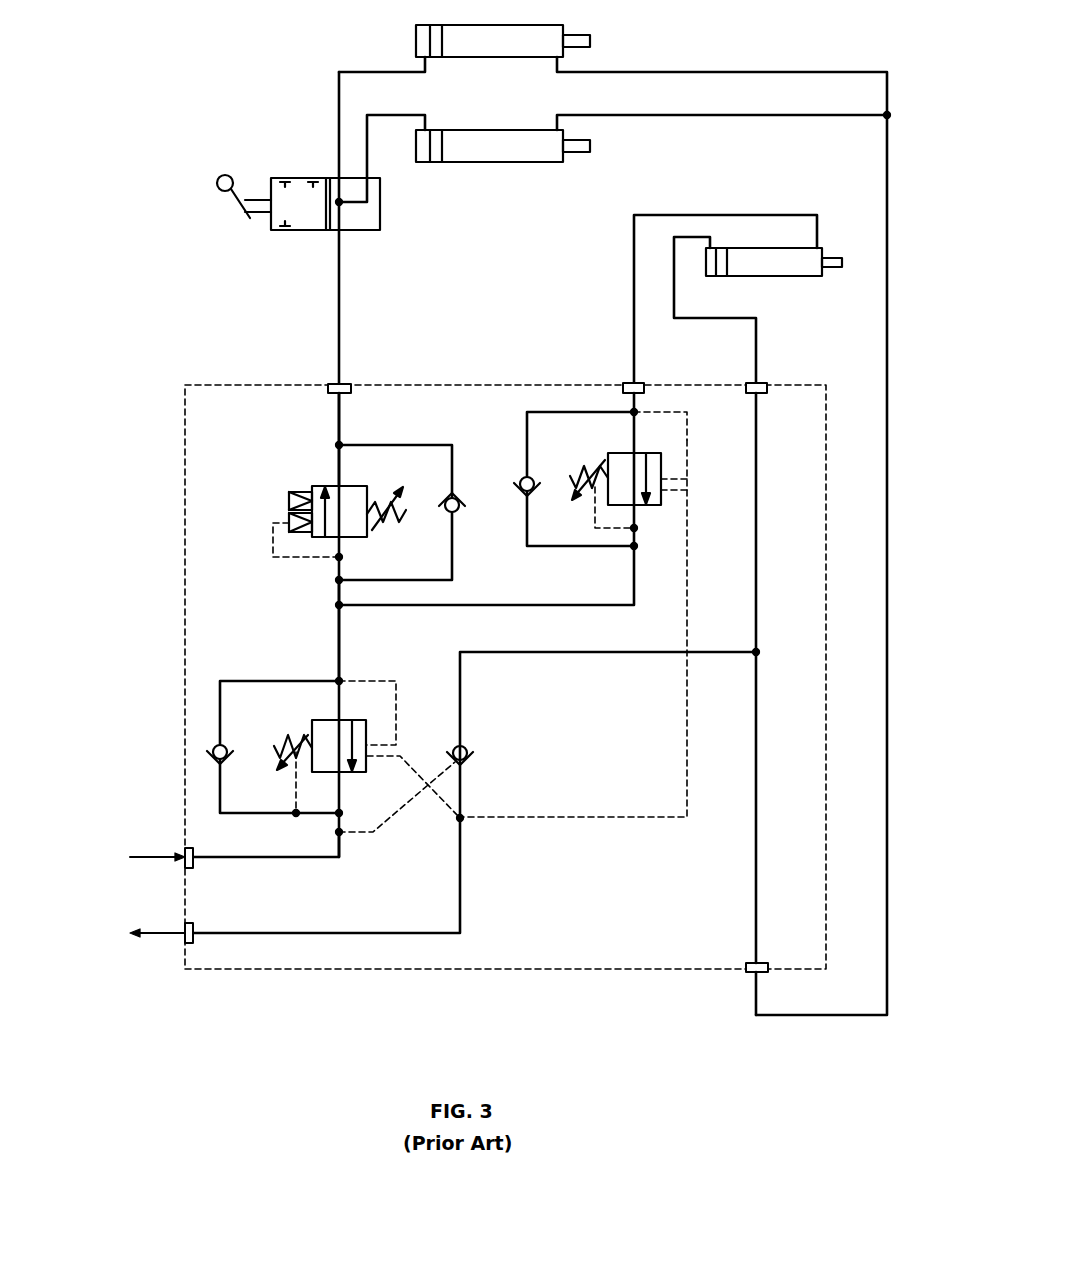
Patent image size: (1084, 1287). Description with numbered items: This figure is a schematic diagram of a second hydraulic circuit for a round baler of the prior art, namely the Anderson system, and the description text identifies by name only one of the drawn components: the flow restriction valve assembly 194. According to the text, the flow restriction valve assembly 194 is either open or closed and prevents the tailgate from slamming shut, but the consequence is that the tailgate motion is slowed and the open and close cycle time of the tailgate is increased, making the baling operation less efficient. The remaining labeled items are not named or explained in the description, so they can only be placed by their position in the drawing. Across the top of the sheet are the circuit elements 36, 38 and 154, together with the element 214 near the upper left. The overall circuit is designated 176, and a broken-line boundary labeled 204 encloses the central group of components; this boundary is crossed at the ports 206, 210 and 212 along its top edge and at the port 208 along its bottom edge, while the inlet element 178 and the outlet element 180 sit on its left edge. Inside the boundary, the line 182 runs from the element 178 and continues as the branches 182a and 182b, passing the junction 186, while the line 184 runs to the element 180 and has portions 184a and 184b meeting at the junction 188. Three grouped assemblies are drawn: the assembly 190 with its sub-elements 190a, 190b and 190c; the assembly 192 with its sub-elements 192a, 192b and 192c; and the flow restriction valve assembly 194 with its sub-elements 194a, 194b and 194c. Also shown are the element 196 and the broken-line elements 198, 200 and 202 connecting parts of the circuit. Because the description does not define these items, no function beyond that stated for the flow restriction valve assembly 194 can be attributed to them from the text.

The hydraulic cylinder 36 is at (490, 130).
The hydraulic cylinder 38 is at (490, 25).
The hydraulic cylinder 154 is at (760, 277).
The hydraulic control system 176 is at (470, 665).
The inlet port 178 is at (195, 866).
The outlet port 180 is at (195, 943).
The supply line 182 is at (305, 858).
The supply line first branch 182a is at (339, 427).
The supply line second branch 182b is at (552, 604).
The return line 184 is at (462, 866).
The return line first portion 184a is at (756, 868).
The return line second portion 184b is at (756, 623).
The junction 186 is at (339, 605).
The junction 188 is at (758, 655).
The first pressure control valve assembly 190 is at (361, 495).
The solenoid operated pressure reducing valve 190a is at (333, 485).
The check valve 190b is at (453, 513).
The solenoid 190c is at (275, 527).
The second pressure control valve assembly 192 is at (600, 458).
The pressure relief valve 192a is at (648, 507).
The check valve 192b is at (520, 477).
The pilot line 192c is at (688, 423).
The flow restriction valve assembly 194 is at (273, 729).
The pressure relief valve 194a is at (332, 720).
The check valve 194b is at (217, 745).
The pilot line 194c is at (360, 680).
The check valve 196 is at (466, 764).
The pilot line 198 is at (687, 682).
The pilot line 200 is at (412, 767).
The pilot line 202 is at (400, 810).
The valve manifold 204 is at (517, 975).
The port 206 is at (352, 385).
The port 208 is at (753, 962).
The port 210 is at (640, 383).
The port 212 is at (763, 383).
The manual control valve 214 is at (305, 178).